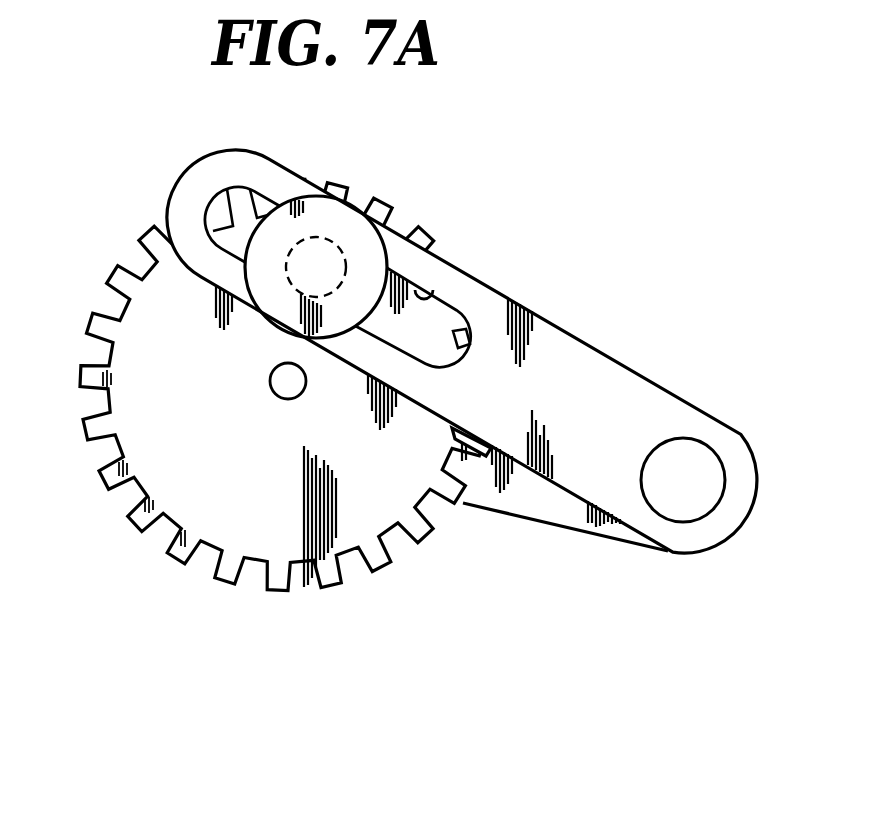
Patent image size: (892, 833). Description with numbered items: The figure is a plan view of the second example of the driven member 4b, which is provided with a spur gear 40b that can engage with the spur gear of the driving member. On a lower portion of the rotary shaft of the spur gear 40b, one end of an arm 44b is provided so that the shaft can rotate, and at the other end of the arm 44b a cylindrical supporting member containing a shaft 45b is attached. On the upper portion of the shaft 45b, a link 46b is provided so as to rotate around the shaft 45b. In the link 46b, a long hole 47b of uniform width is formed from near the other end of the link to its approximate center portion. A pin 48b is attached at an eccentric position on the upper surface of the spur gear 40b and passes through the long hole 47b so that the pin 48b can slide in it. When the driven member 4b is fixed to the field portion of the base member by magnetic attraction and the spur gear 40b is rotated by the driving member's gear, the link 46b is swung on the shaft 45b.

The driven member 4b is at (532, 118).
The spur gear 40b is at (370, 513).
The arm 44b is at (527, 507).
The shaft 45b is at (698, 463).
The link 46b is at (610, 373).
The long hole 47b is at (439, 307).
The pin 48b is at (405, 230).